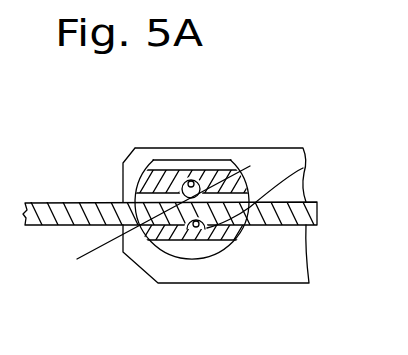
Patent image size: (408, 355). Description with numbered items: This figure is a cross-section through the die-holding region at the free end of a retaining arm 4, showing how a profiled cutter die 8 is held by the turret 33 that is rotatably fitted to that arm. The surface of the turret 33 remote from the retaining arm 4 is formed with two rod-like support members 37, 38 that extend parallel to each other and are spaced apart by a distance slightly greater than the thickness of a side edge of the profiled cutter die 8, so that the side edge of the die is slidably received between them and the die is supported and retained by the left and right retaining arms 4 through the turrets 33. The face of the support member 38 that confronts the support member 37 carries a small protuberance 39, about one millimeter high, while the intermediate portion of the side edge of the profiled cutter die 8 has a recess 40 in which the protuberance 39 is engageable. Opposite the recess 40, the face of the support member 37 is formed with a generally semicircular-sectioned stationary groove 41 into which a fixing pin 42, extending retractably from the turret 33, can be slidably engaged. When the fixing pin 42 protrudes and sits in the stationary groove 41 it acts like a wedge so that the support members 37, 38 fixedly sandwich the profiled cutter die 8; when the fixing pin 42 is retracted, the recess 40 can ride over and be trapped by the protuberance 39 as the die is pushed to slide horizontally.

The retaining arm 4 is at (272, 148).
The profiled cutter die 8 is at (78, 203).
The turret 33 is at (200, 260).
The support member 37 is at (160, 180).
The support member 38 is at (165, 236).
The protuberance 39 is at (194, 238).
The recess 40 is at (303, 168).
The stationary groove 41 is at (192, 180).
The fixing pin 42 is at (145, 224).